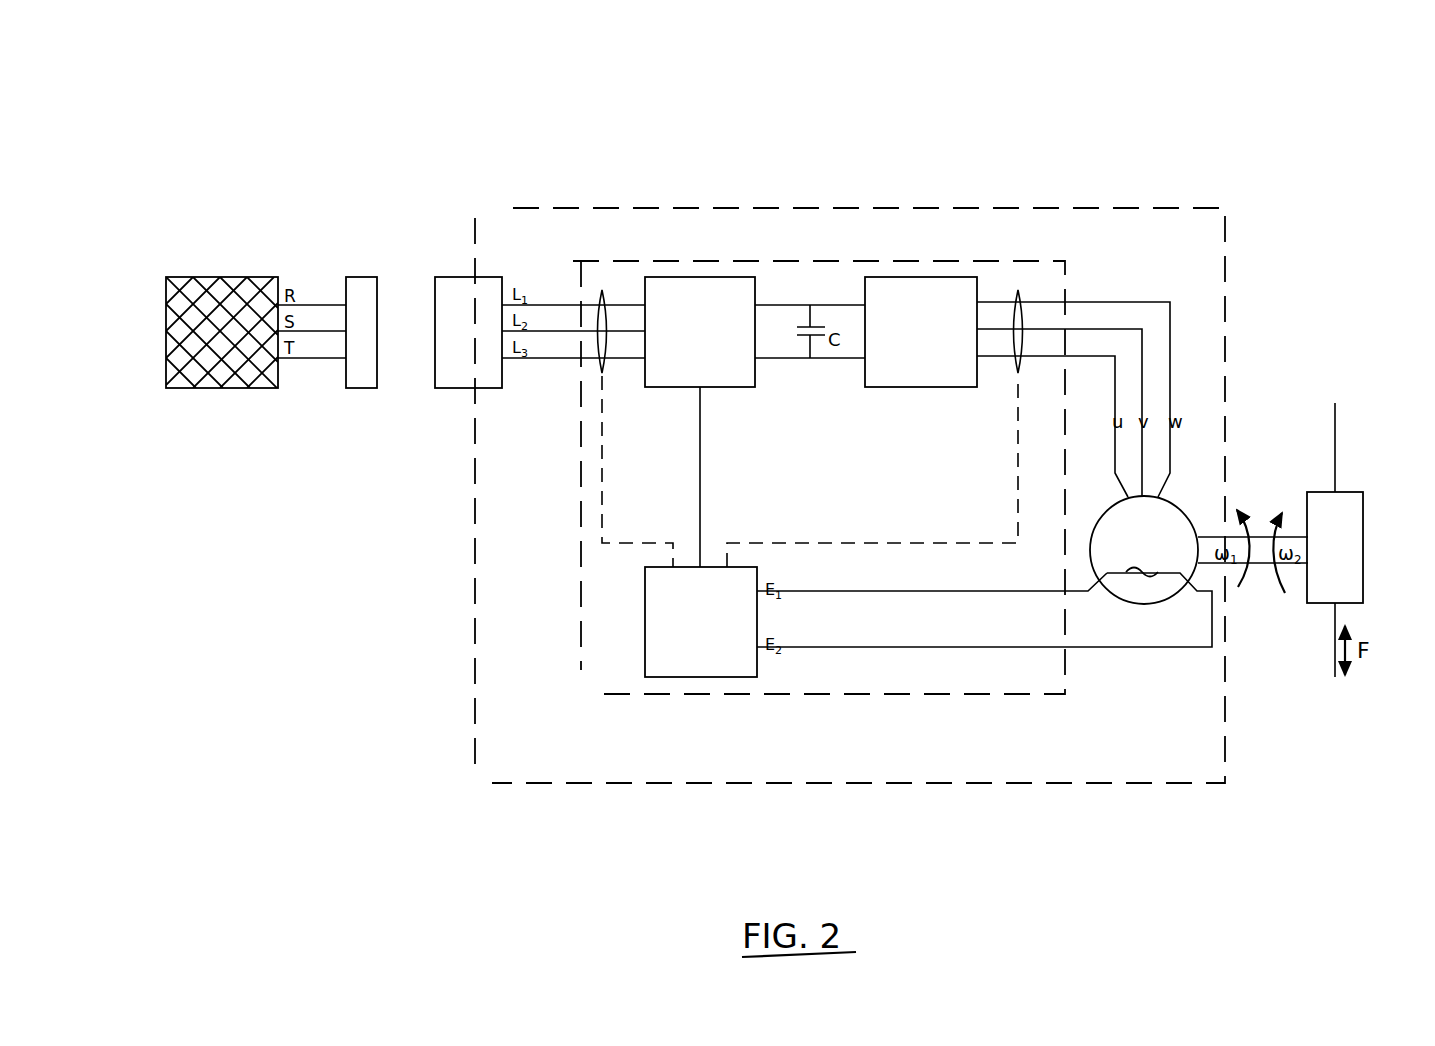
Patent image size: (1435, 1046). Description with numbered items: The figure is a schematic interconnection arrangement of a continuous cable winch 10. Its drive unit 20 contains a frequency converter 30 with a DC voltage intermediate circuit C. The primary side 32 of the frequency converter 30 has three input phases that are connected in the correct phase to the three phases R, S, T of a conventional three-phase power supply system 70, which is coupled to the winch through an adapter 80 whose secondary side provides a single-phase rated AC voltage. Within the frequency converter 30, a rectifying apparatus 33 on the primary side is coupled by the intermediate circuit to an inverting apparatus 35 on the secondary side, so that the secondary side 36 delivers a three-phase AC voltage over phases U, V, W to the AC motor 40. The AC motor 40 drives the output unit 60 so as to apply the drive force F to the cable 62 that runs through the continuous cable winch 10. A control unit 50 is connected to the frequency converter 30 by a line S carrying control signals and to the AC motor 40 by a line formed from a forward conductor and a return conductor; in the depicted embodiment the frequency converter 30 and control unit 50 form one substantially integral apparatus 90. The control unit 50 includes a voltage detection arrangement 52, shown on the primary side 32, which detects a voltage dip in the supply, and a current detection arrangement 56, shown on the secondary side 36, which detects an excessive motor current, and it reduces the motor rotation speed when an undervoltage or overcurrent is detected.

The continuous cable winch 10 is at (1236, 184).
The drive unit 20 is at (548, 232).
The frequency converter 30 is at (808, 262).
The primary side 32 is at (638, 296).
The rectifying apparatus 33 is at (694, 318).
The inverting apparatus 35 is at (926, 312).
The secondary side 36 is at (982, 295).
The AC motor 40 is at (1165, 538).
The control unit 50 is at (672, 657).
The voltage detection arrangement 52 is at (612, 380).
The current detection arrangement 56 is at (1010, 368).
The output unit 60 is at (1326, 577).
The cable 62 is at (1340, 438).
The power supply system 70 is at (217, 390).
The adapter 80 is at (454, 362).
The apparatus 90 is at (600, 630).